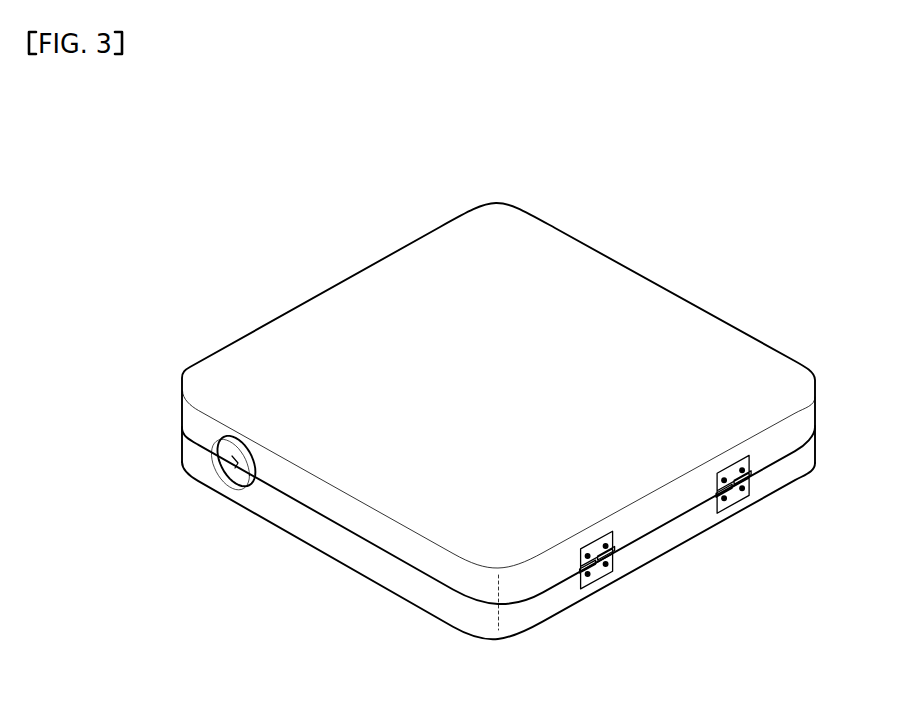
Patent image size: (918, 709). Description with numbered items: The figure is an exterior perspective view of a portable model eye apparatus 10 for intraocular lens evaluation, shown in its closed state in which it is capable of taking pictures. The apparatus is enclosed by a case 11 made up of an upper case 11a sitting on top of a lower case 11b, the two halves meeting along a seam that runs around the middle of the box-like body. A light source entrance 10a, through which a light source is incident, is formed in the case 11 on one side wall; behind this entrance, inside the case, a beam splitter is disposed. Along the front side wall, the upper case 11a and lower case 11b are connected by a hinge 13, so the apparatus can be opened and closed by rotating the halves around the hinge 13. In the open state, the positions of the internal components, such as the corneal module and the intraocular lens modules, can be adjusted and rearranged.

The portable model eye apparatus 10 is at (232, 152).
The light source entrance 10a is at (233, 465).
The case 11 is at (615, 255).
The upper case 11a is at (378, 532).
The lower case 11b is at (415, 589).
The hinge 13 is at (597, 578).